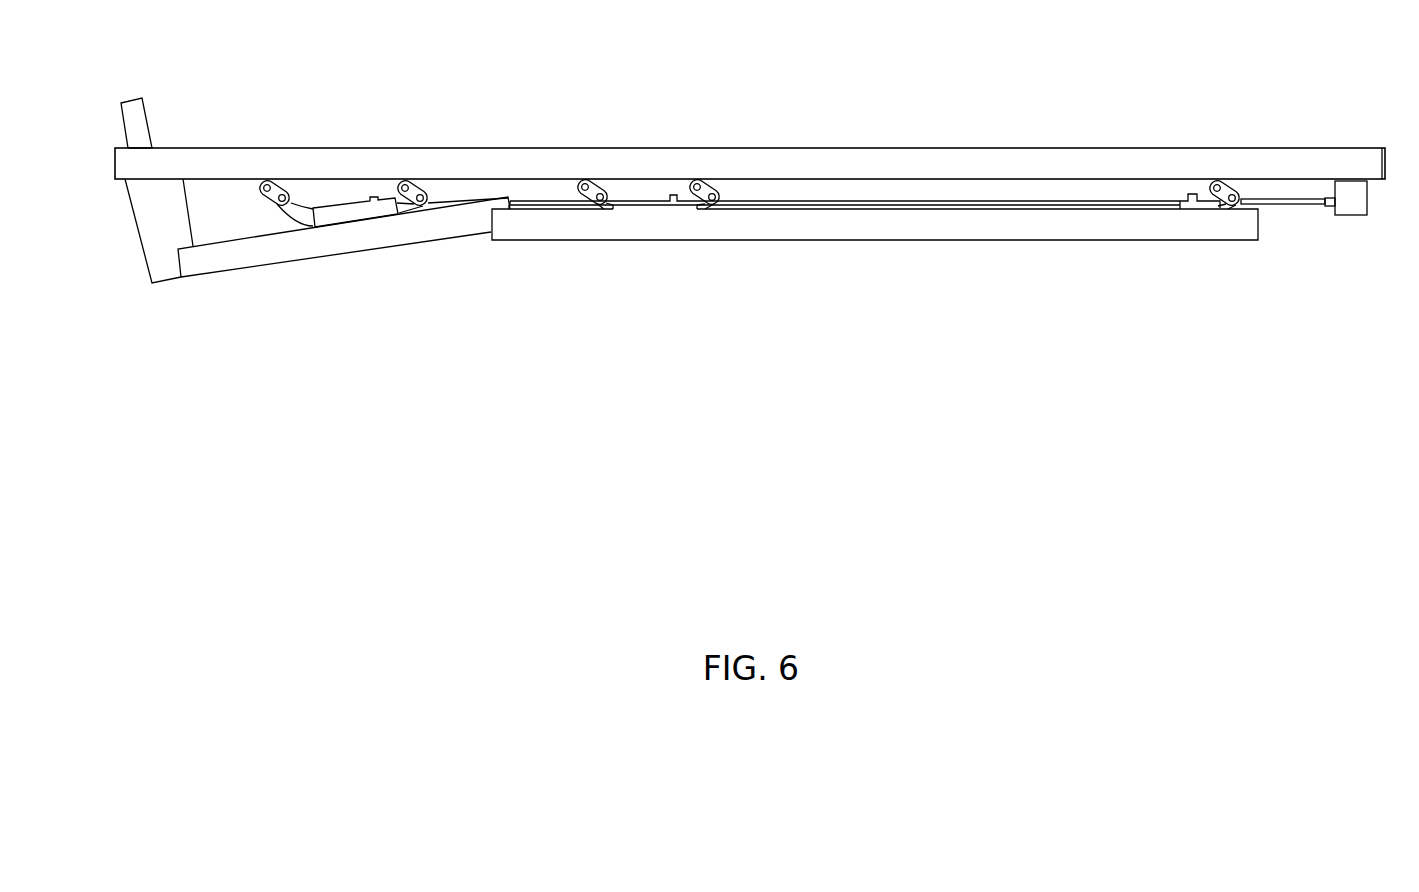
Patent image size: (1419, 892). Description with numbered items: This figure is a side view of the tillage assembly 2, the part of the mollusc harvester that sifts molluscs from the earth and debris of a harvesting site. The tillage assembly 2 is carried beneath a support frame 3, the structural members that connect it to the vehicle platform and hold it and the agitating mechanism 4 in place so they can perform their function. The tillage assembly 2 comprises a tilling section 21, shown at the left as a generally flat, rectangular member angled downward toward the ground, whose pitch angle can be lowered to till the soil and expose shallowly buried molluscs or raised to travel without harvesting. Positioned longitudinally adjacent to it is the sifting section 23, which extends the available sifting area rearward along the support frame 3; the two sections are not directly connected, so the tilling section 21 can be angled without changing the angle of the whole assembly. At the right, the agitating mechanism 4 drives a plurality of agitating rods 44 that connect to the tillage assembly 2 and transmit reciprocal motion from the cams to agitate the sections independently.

The support frame 3 is at (327, 118).
The tillage assembly 2 is at (718, 328).
The tilling section 21 is at (339, 298).
The sifting section 23 is at (1007, 313).
The agitating mechanism 4 is at (1353, 242).
The agitating rods 44 is at (1292, 200).